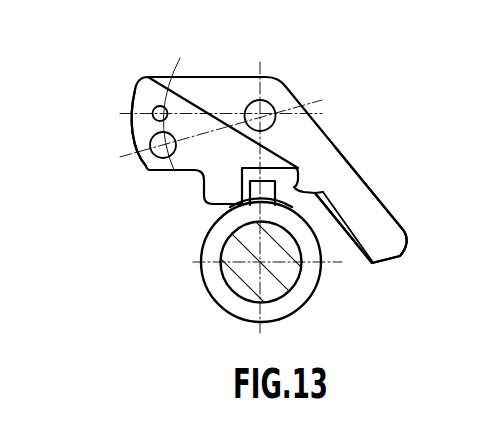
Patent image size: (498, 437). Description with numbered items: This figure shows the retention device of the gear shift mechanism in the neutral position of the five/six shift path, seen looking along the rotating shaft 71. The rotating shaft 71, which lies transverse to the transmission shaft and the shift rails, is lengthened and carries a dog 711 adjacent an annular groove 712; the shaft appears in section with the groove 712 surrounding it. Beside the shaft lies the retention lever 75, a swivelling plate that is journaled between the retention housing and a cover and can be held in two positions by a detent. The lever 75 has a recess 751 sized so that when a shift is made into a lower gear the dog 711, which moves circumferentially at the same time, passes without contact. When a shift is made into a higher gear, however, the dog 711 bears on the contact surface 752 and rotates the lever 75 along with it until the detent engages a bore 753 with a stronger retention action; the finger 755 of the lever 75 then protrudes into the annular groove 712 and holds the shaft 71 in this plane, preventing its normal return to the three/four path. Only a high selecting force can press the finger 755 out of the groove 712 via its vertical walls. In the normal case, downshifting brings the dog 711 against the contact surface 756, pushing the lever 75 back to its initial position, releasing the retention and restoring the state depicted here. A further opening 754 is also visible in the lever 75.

The retention lever 75 is at (217, 88).
The recess 751 is at (285, 176).
The contact surface 752 is at (268, 177).
The bore 753 is at (152, 153).
The pin hole of cam plate 754 is at (158, 106).
The finger 755 is at (372, 210).
The contact surface 756 is at (305, 190).
The rotating shaft 71 is at (222, 268).
The dog 711 is at (247, 204).
The annular groove 712 is at (218, 290).